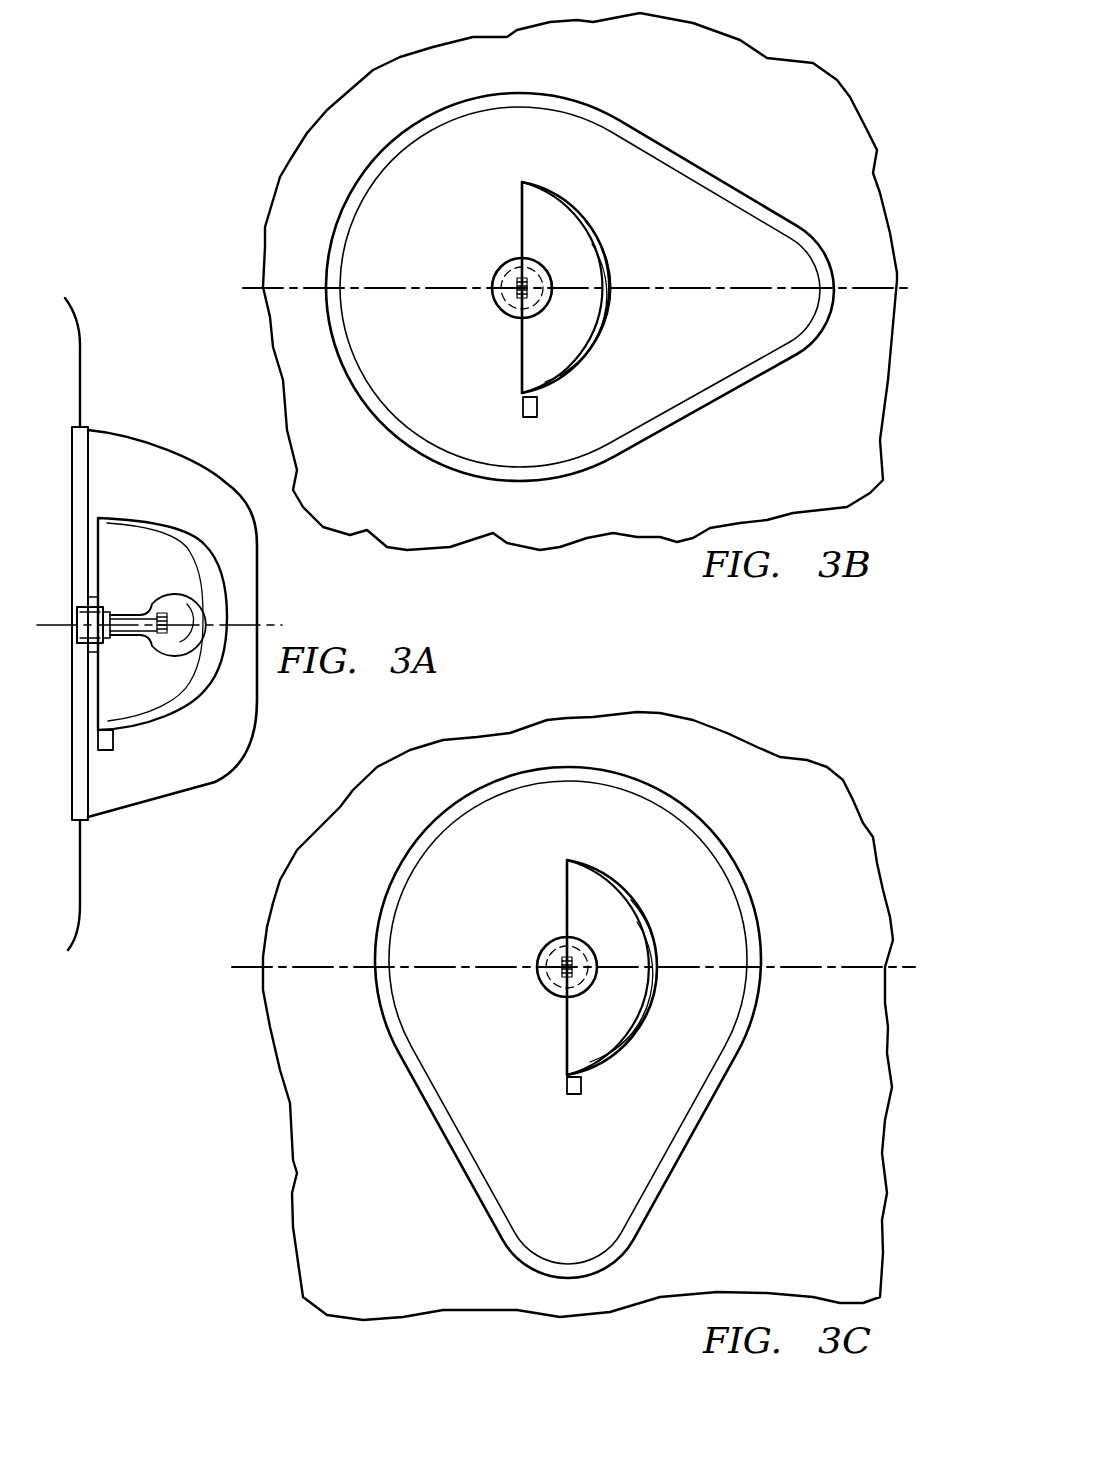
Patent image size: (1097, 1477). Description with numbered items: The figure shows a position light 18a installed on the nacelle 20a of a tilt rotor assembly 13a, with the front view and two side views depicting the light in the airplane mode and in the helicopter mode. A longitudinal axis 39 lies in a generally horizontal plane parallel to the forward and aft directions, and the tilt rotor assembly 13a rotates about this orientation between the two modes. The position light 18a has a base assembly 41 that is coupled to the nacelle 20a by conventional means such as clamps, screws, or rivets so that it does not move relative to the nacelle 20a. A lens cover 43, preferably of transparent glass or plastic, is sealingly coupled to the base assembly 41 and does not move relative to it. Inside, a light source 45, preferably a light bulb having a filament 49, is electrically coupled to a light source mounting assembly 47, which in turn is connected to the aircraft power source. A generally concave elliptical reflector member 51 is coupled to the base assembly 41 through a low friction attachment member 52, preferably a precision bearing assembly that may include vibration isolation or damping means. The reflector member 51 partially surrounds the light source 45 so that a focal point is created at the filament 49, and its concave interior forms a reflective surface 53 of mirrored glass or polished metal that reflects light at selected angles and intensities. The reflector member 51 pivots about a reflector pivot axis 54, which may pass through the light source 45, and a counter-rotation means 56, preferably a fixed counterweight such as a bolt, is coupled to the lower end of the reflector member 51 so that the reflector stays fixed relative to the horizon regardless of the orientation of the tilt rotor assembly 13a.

In FIG. 3B, the tilt rotor assembly 13a is at (305, 102).
In FIG. 3A, the tilt rotor assembly 13a is at (98, 398).
In FIG. 3C, the tilt rotor assembly 13a is at (262, 1230).
In FIG. 3B, the position light 18a is at (380, 448).
In FIG. 3A, the position light 18a is at (158, 424).
In FIG. 3C, the position light 18a is at (420, 1140).
In FIG. 3B, the nacelle 20a is at (745, 40).
In FIG. 3A, the nacelle 20a is at (86, 920).
In FIG. 3C, the nacelle 20a is at (752, 746).
In FIG. 3B, the longitudinal axis 39 is at (306, 294).
In FIG. 3C, the longitudinal axis 39 is at (306, 973).
In FIG. 3B, the base assembly 41 is at (632, 131).
In FIG. 3A, the base assembly 41 is at (74, 824).
In FIG. 3C, the base assembly 41 is at (677, 798).
In FIG. 3B, the lens cover 43 is at (658, 192).
In FIG. 3A, the lens cover 43 is at (200, 458).
In FIG. 3C, the lens cover 43 is at (690, 870).
In FIG. 3B, the light source 45 is at (493, 286).
In FIG. 3A, the light source 45 is at (160, 594).
In FIG. 3C, the light source 45 is at (538, 965).
In FIG. 3B, the light source mounting assembly 47 is at (504, 308).
In FIG. 3A, the light source mounting assembly 47 is at (76, 636).
In FIG. 3C, the light source mounting assembly 47 is at (549, 988).
In FIG. 3B, the filament 49 is at (518, 278).
In FIG. 3A, the filament 49 is at (161, 636).
In FIG. 3C, the filament 49 is at (563, 957).
In FIG. 3B, the reflector member 51 is at (612, 330).
In FIG. 3A, the reflector member 51 is at (158, 732).
In FIG. 3C, the reflector member 51 is at (657, 1008).
In FIG. 3A, the low friction attachment member 52 is at (88, 598).
In FIG. 3B, the reflective surface 53 is at (534, 346).
In FIG. 3A, the reflective surface 53 is at (122, 546).
In FIG. 3C, the reflective surface 53 is at (579, 1026).
In FIG. 3A, the reflector pivot axis 54 is at (58, 622).
In FIG. 3B, the counter-rotation means 56 is at (540, 405).
In FIG. 3A, the counter-rotation means 56 is at (108, 756).
In FIG. 3C, the counter-rotation means 56 is at (584, 1086).